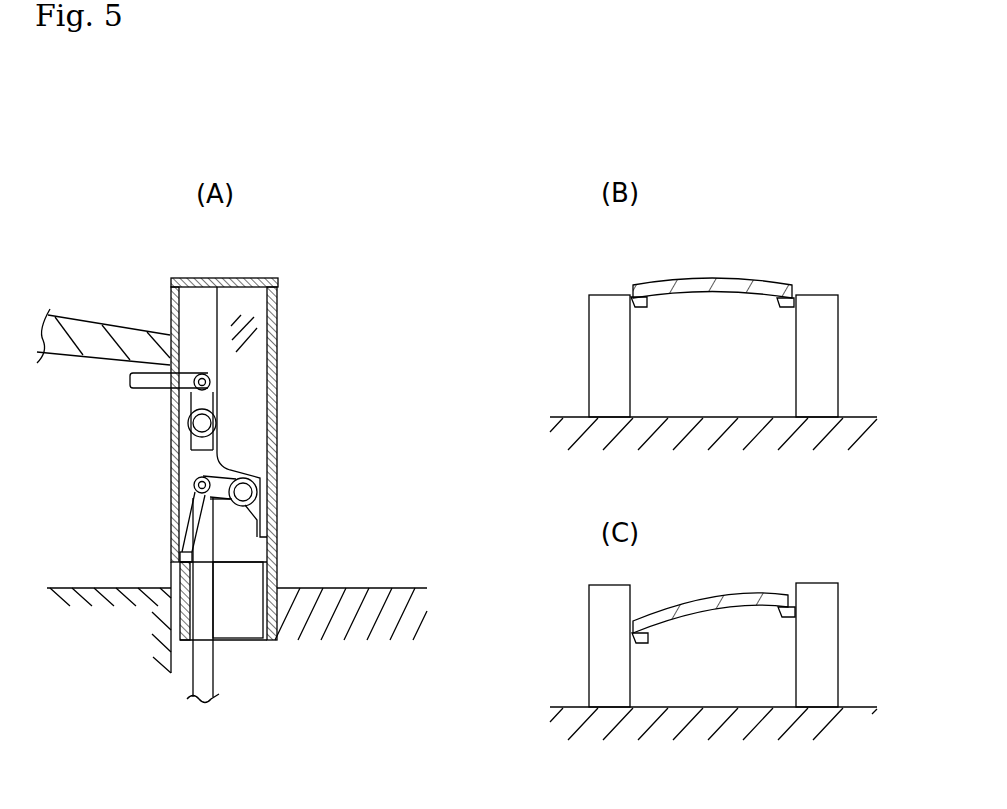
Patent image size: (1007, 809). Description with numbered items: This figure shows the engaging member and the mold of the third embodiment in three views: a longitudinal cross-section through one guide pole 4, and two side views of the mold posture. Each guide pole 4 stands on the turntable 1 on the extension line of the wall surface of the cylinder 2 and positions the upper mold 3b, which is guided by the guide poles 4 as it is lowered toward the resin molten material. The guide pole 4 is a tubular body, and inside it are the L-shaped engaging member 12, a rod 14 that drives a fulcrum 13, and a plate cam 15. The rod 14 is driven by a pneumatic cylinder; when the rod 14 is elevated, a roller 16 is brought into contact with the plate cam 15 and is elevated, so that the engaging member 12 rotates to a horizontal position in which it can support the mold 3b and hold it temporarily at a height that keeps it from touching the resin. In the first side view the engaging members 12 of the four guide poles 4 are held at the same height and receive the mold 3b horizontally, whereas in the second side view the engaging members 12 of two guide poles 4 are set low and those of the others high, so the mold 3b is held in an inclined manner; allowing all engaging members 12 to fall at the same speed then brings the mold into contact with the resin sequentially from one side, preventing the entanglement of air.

The turntable 1 is at (348, 617).
The cylinder 2 is at (102, 645).
The upper mold 3b is at (76, 318).
The guide pole 4 is at (277, 313).
The engaging member 12 is at (145, 380).
The fulcrum 13 is at (193, 493).
The rod 14 is at (200, 672).
The plate cam 15 is at (236, 347).
The roller 16 is at (277, 523).